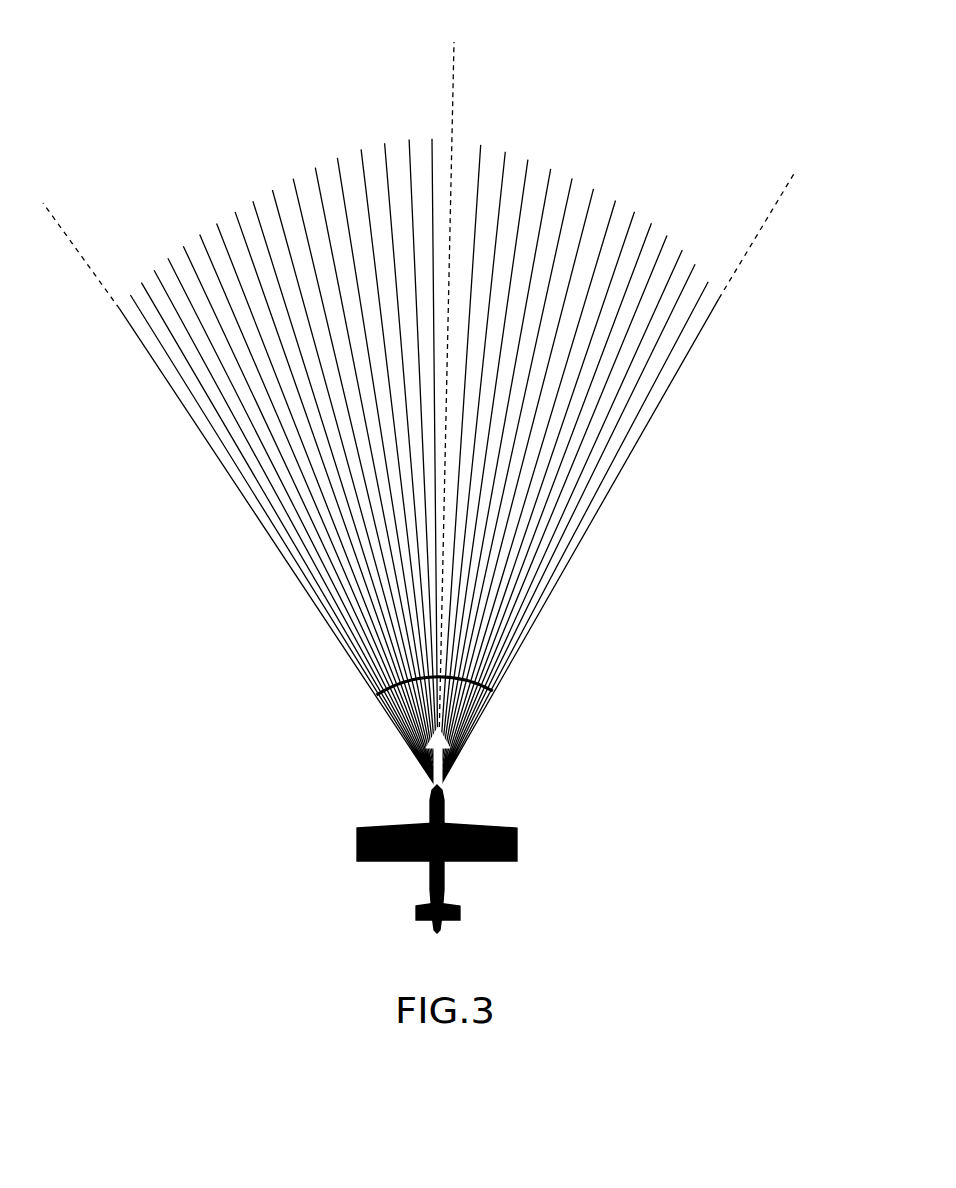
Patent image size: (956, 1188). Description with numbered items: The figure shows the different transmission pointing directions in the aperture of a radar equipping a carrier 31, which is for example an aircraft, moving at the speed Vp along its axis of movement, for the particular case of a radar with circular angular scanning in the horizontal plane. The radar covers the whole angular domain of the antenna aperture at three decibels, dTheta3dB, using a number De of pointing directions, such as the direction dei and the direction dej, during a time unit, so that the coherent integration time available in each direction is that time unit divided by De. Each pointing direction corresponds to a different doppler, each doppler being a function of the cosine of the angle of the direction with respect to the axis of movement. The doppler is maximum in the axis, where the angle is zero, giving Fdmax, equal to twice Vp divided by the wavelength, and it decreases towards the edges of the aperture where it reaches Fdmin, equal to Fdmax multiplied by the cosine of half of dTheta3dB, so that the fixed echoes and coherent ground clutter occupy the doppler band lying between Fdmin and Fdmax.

The carrier 31 is at (517, 841).
The number of pointing directions De is at (419, 464).
The pointing direction dei is at (372, 467).
The pointing direction dej is at (496, 465).
The maximum doppler frequency Fdmax is at (459, 403).
The minimum doppler frequency Fdmin is at (447, 240).
The antenna aperture at 3 dB dTheta3dB is at (468, 686).
The carrier speed Vp is at (452, 759).